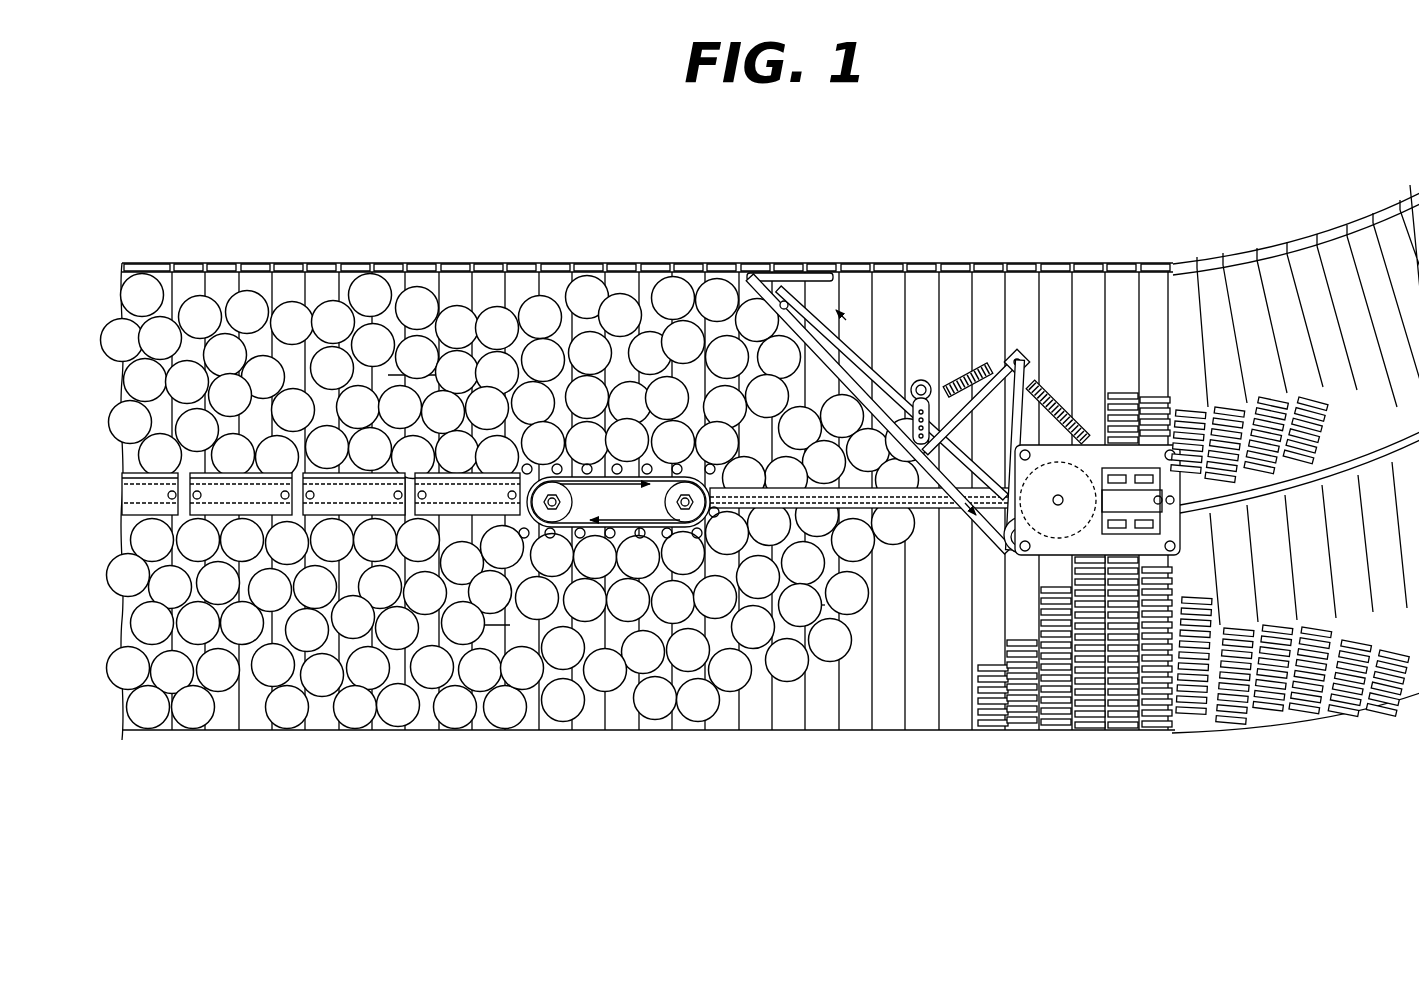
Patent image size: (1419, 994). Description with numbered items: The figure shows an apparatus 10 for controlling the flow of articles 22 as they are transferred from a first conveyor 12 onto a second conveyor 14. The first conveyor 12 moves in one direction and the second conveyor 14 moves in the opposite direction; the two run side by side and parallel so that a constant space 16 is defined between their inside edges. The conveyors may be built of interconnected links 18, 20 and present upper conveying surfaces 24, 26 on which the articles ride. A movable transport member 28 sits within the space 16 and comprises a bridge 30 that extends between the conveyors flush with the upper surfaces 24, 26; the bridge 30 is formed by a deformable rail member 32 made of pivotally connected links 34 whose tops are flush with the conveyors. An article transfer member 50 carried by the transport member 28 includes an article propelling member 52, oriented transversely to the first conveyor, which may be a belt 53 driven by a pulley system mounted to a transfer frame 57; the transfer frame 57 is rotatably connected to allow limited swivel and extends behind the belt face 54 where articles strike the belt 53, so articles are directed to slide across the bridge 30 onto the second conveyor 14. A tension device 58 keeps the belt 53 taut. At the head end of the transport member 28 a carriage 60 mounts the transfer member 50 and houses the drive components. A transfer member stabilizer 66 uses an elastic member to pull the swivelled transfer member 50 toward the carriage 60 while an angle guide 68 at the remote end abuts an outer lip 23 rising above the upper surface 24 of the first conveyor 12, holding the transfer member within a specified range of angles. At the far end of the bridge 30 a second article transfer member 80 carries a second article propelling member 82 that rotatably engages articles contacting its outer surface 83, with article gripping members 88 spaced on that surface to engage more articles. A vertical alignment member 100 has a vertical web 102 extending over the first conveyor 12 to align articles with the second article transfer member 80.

The apparatus 10 is at (1086, 745).
The first conveyor 12 is at (513, 288).
The second conveyor 14 is at (520, 745).
The space 16 is at (1265, 492).
The links 18 is at (295, 280).
The links 20 is at (585, 722).
The articles 22 is at (373, 290).
The outer lip 23 is at (258, 265).
The upper conveying surface 24 is at (960, 290).
The upper conveying surface 26 is at (625, 722).
The movable transport member 28 is at (902, 560).
The bridge 30 is at (905, 512).
The deformable rail member 32 is at (942, 515).
The links 34 is at (948, 512).
The article transfer member 50 is at (985, 352).
The article propelling member 52 is at (907, 352).
The belt 53 is at (835, 300).
The belt face 54 is at (840, 390).
The transfer frame 57 is at (992, 545).
The tension device 58 is at (945, 376).
The carriage 60 is at (1103, 440).
The transfer member stabilizer 66 is at (1056, 385).
The angle guide 68 is at (757, 273).
The second article transfer member 80 is at (708, 483).
The second article propelling member 82 is at (572, 462).
The outer surface 83 is at (630, 464).
The article gripping members 88 is at (718, 518).
The vertical alignment member 100 is at (257, 468).
The vertical web 102 is at (142, 272).